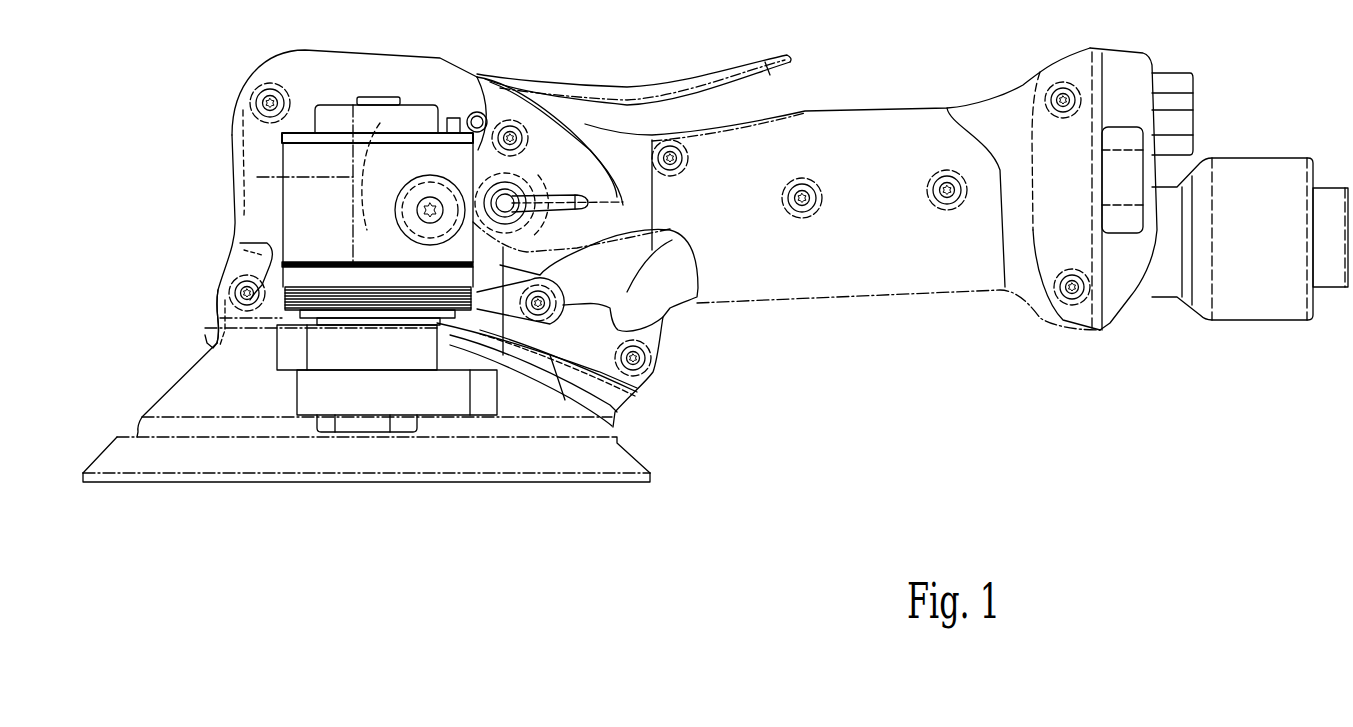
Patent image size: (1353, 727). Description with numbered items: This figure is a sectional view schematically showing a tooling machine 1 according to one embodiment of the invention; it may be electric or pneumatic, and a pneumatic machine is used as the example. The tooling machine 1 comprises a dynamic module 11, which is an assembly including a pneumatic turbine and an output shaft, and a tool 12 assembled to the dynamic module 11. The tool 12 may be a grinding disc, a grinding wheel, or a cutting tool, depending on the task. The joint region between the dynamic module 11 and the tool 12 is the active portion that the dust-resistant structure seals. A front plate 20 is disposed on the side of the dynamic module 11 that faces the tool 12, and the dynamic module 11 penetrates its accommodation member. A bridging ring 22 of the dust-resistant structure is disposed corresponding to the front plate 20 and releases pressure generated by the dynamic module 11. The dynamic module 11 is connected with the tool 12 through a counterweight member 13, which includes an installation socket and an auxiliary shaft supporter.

The tooling machine 1 is at (859, 98).
The dynamic module 11 is at (282, 167).
The tool 12 is at (218, 463).
The counterweight member 13 is at (458, 403).
The front plate 20 is at (258, 265).
The bridging ring 22 is at (218, 318).